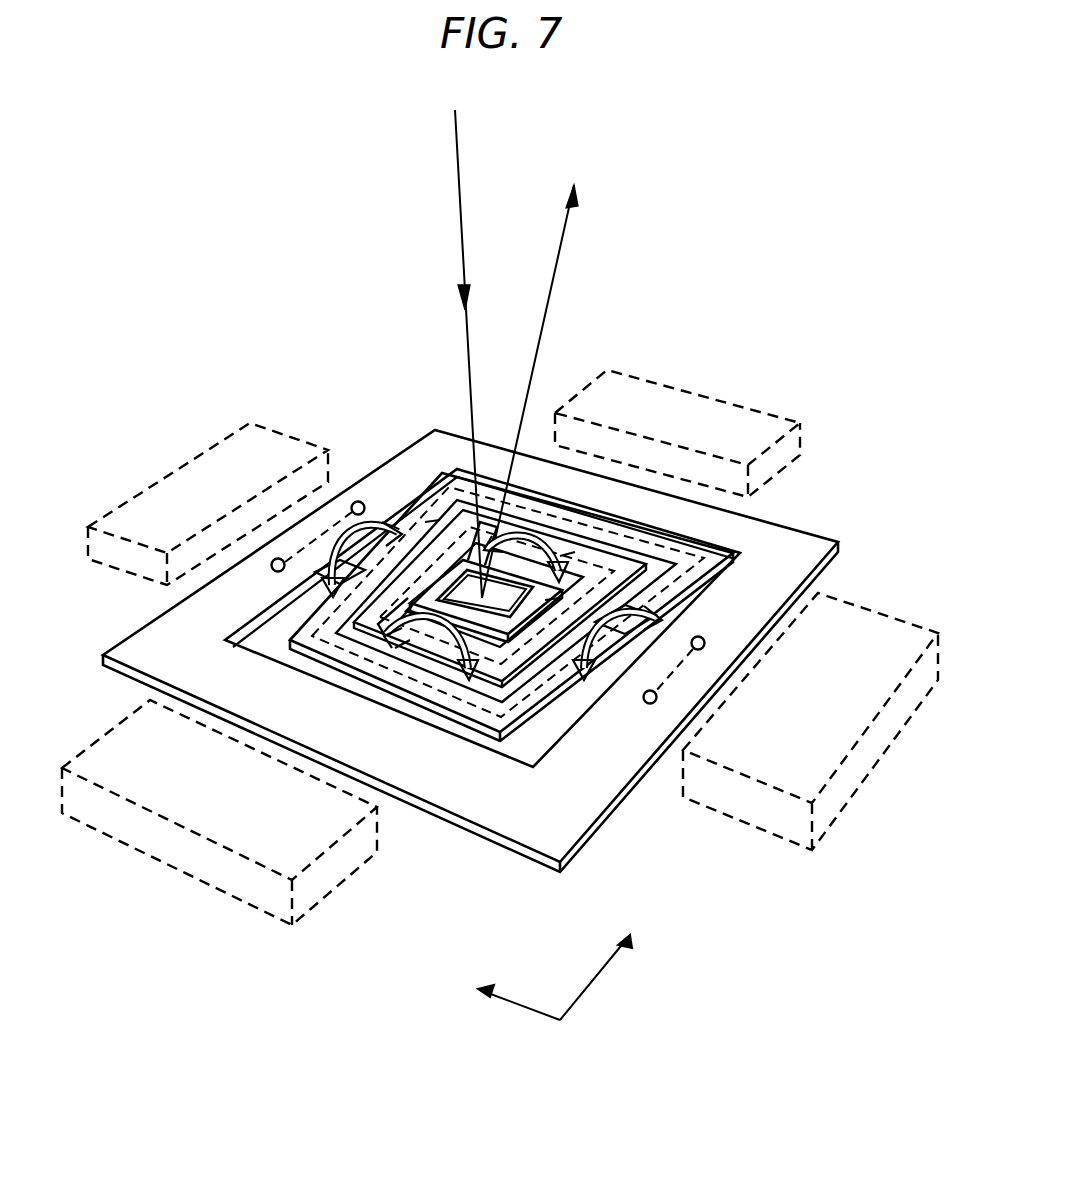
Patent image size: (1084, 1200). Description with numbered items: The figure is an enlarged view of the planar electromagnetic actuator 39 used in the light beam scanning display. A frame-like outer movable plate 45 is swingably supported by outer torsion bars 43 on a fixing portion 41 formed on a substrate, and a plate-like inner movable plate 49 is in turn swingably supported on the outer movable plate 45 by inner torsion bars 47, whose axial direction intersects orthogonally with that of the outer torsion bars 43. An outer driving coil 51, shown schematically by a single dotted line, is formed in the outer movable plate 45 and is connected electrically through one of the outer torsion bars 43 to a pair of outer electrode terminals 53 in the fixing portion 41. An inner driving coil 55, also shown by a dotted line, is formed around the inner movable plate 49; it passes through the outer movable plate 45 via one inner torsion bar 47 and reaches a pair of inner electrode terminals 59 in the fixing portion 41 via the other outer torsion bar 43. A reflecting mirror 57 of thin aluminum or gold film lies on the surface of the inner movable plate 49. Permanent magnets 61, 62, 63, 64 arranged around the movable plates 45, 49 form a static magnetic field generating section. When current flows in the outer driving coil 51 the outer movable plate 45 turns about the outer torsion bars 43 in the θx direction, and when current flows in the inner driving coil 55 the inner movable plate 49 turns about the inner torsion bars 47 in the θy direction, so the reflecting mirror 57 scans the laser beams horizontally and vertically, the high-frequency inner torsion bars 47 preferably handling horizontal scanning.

The planar electromagnetic actuator 39 is at (592, 298).
The fixing portion 41 is at (795, 538).
The outer torsion bars 43 is at (395, 540).
The outer movable plate 45 is at (507, 705).
The inner torsion bars 47 is at (553, 562).
The inner movable plate 49 is at (400, 652).
The outer driving coil 51 is at (432, 525).
The outer electrode terminals 53 is at (275, 558).
The inner driving coil 55 is at (552, 600).
The reflecting mirror 57 is at (567, 554).
The inner electrode terminals 59 is at (657, 698).
The permanent magnet 61 is at (248, 890).
The permanent magnet 62 is at (852, 800).
The permanent magnet 63 is at (660, 398).
The permanent magnet 64 is at (223, 468).